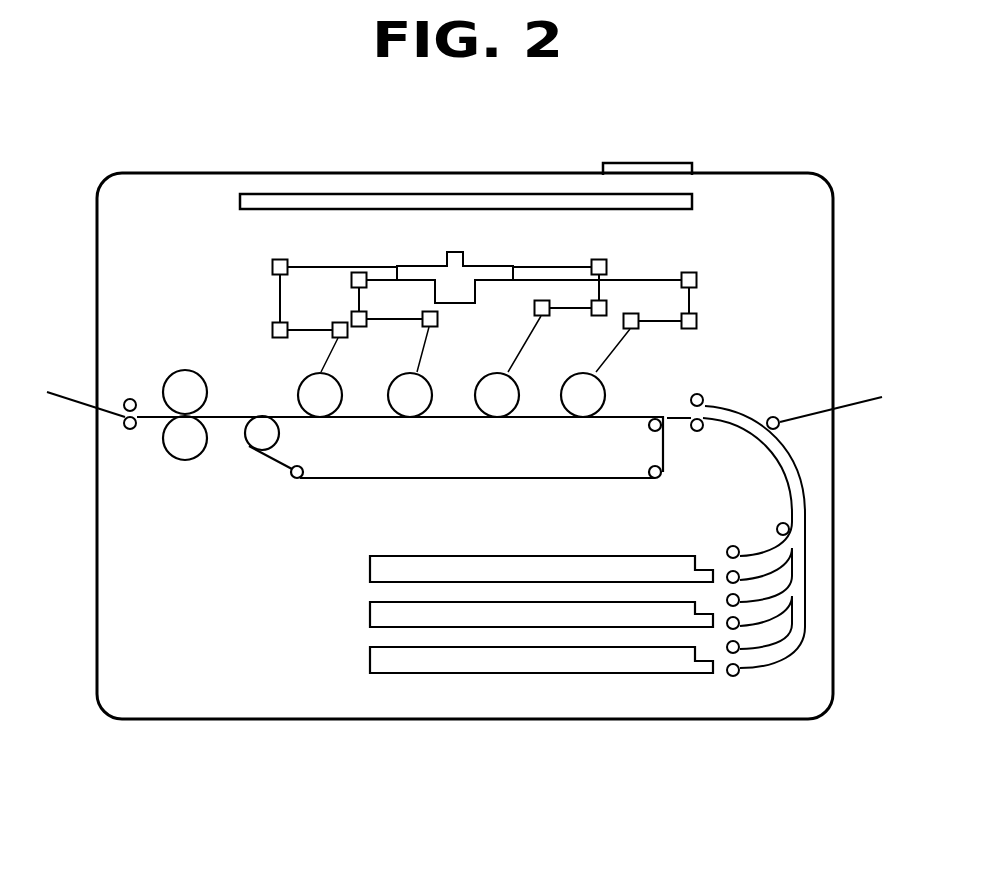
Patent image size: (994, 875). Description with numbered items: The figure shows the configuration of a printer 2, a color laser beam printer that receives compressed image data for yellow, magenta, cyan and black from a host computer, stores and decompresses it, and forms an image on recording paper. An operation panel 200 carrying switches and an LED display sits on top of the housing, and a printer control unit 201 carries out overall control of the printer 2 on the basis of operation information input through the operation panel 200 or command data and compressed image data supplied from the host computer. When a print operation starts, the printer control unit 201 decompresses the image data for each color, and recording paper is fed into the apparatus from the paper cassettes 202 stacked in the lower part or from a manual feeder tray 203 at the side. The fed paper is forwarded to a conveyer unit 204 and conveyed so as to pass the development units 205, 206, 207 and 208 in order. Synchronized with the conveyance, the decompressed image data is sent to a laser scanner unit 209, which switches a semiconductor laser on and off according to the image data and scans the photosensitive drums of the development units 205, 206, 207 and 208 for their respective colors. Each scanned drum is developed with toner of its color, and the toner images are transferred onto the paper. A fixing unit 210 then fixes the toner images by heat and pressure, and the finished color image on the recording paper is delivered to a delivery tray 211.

The printer 2 is at (114, 720).
The operation panel 200 is at (706, 143).
The printer control unit 201 is at (486, 194).
The paper cassettes 202 is at (370, 660).
The manual feeder tray 203 is at (855, 404).
The conveyer unit 204 is at (334, 478).
The development unit 205 is at (637, 378).
The development unit 206 is at (543, 378).
The development unit 207 is at (388, 392).
The development unit 208 is at (298, 392).
The laser scanner unit 209 is at (506, 245).
The fixing unit 210 is at (174, 458).
The delivery tray 211 is at (79, 402).